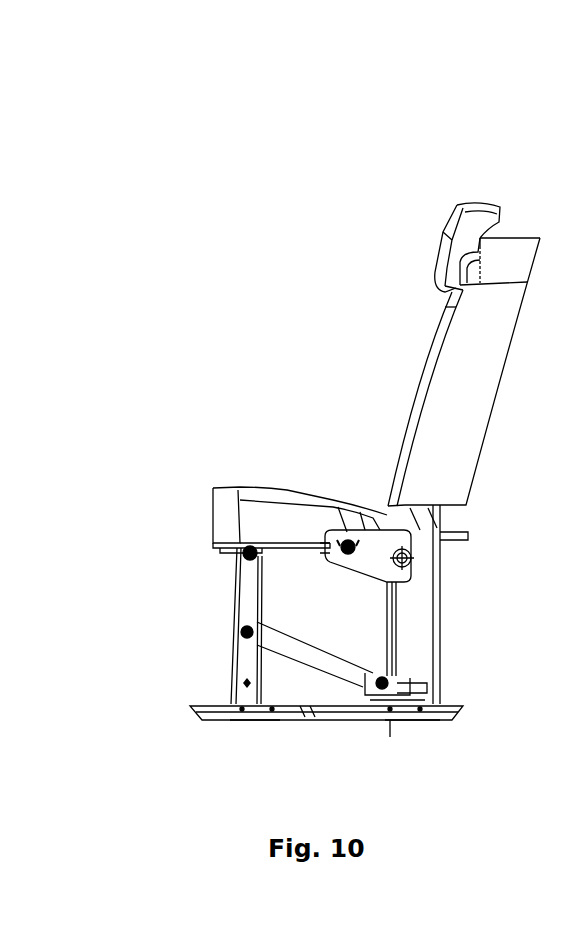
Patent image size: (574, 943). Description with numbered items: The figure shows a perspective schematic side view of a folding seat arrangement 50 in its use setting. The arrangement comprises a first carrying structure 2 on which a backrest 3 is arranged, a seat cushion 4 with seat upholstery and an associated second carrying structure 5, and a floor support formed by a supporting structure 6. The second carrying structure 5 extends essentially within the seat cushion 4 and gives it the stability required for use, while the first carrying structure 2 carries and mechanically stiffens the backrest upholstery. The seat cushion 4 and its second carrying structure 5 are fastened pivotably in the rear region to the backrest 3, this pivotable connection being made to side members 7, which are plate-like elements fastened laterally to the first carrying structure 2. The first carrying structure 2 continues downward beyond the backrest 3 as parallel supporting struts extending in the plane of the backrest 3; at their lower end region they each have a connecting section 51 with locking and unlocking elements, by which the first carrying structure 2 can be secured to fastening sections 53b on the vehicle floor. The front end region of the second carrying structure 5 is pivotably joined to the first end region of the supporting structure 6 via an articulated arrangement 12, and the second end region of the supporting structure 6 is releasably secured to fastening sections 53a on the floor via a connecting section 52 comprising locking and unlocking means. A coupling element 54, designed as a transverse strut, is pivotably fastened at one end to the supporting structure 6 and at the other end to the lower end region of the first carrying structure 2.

The folding seat arrangement 50 is at (252, 268).
The backrest 3 is at (479, 378).
The seat cushion 4 is at (226, 504).
The articulated arrangement 12 is at (250, 547).
The second carrying structure 5 is at (245, 548).
The supporting structure 6 is at (247, 597).
The coupling element 54 is at (322, 662).
The side member 7 is at (372, 565).
The first carrying structure 2 is at (435, 520).
The connecting section 51 is at (425, 688).
The connecting section 52 is at (237, 697).
The fastening section 53a is at (253, 720).
The fastening section 53b is at (418, 720).